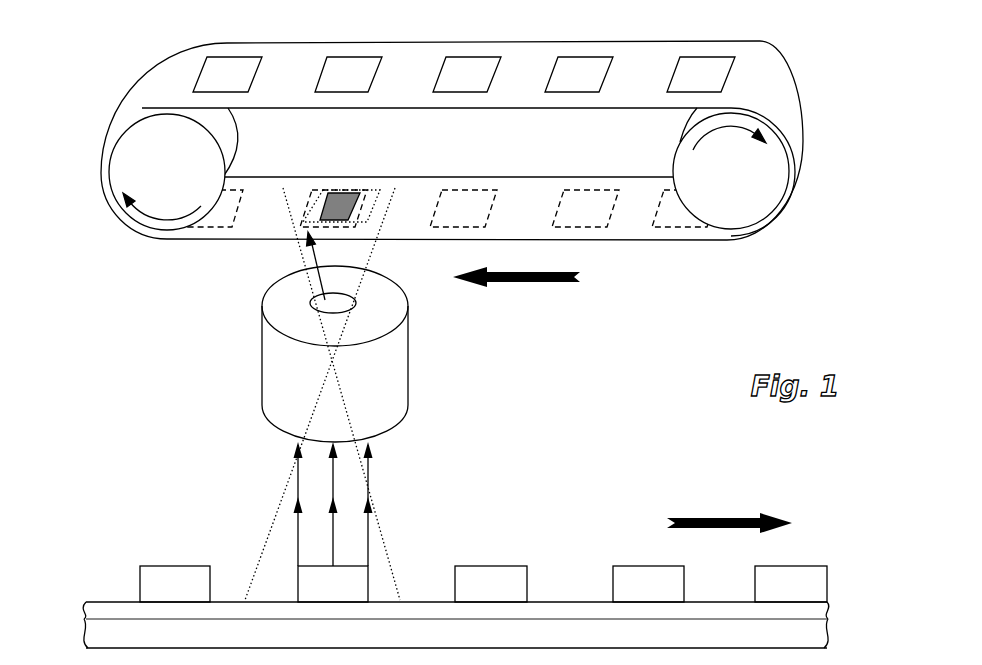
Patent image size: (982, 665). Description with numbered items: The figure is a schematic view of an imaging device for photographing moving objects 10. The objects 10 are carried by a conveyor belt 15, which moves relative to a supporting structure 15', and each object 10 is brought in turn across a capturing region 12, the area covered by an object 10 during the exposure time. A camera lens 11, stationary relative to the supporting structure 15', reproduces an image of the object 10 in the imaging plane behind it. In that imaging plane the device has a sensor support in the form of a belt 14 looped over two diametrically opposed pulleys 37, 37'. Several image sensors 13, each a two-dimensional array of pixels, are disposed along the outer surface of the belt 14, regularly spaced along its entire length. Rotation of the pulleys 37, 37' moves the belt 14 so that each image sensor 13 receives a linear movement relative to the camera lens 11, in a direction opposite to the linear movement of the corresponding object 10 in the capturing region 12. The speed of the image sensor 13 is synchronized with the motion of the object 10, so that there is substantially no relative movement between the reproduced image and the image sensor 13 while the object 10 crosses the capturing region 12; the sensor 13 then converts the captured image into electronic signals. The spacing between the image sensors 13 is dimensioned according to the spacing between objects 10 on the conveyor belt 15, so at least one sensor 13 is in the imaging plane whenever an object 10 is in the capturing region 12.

The moving object 10 is at (347, 573).
The camera lens 11 is at (280, 382).
The capturing region 12 is at (255, 559).
The image sensor 13 is at (337, 67).
The belt 14 is at (773, 72).
The conveyor belt 15 is at (437, 582).
The supporting structure 15' is at (415, 614).
The pulley 37 is at (154, 149).
The pulley 37' is at (766, 158).